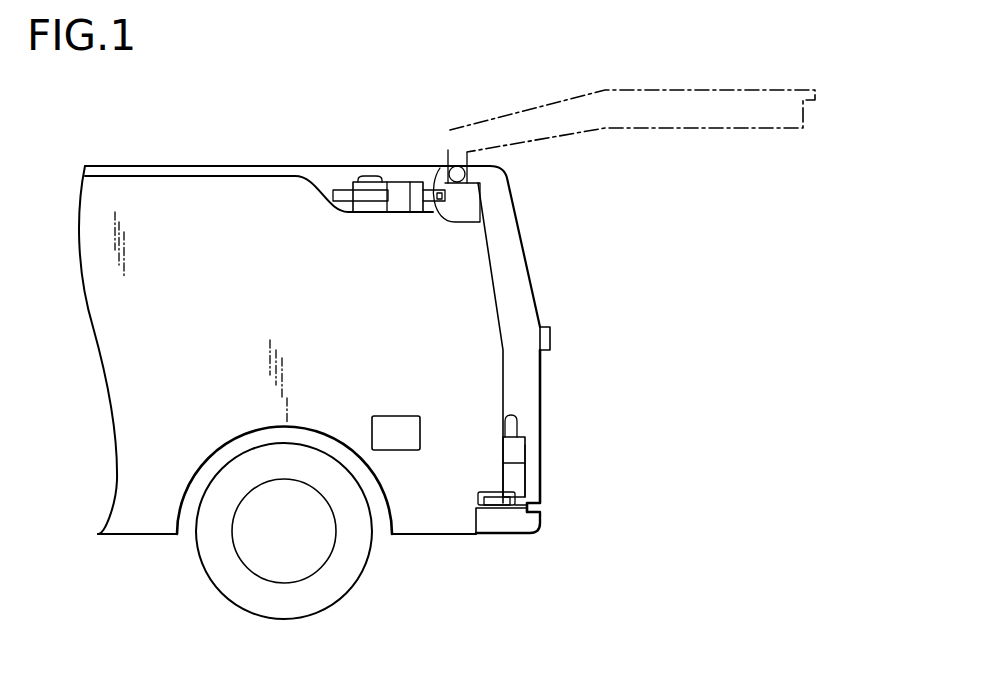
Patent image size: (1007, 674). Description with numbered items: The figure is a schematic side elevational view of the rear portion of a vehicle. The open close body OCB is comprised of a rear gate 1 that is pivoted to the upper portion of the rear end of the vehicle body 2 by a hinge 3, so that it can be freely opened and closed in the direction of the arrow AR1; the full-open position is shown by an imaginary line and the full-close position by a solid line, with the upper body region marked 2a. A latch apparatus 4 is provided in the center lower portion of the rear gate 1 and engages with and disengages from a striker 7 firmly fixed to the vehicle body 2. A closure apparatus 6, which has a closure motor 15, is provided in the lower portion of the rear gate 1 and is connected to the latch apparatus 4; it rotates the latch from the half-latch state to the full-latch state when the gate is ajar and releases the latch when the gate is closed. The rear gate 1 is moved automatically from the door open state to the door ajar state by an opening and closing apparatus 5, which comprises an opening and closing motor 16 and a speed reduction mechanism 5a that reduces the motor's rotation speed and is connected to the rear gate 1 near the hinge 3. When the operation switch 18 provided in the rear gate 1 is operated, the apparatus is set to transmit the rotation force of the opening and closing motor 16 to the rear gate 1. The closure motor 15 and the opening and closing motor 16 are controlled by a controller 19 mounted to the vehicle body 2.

The rear gate 1 is at (528, 255).
The vehicle body 2 is at (112, 165).
The roof 2a is at (237, 163).
The hinge 3 is at (457, 165).
The latch apparatus 4 is at (530, 468).
The opening and closing apparatus 5 is at (390, 174).
The speed reduction mechanism 5a is at (372, 201).
The closure apparatus 6 is at (525, 426).
The striker 7 is at (493, 496).
The closure motor 15 is at (508, 425).
The opening and closing motor 16 is at (365, 175).
The operation switch 18 is at (552, 337).
The controller 19 is at (403, 450).
The arrow AR1 is at (745, 192).
The open close body OCB is at (714, 288).